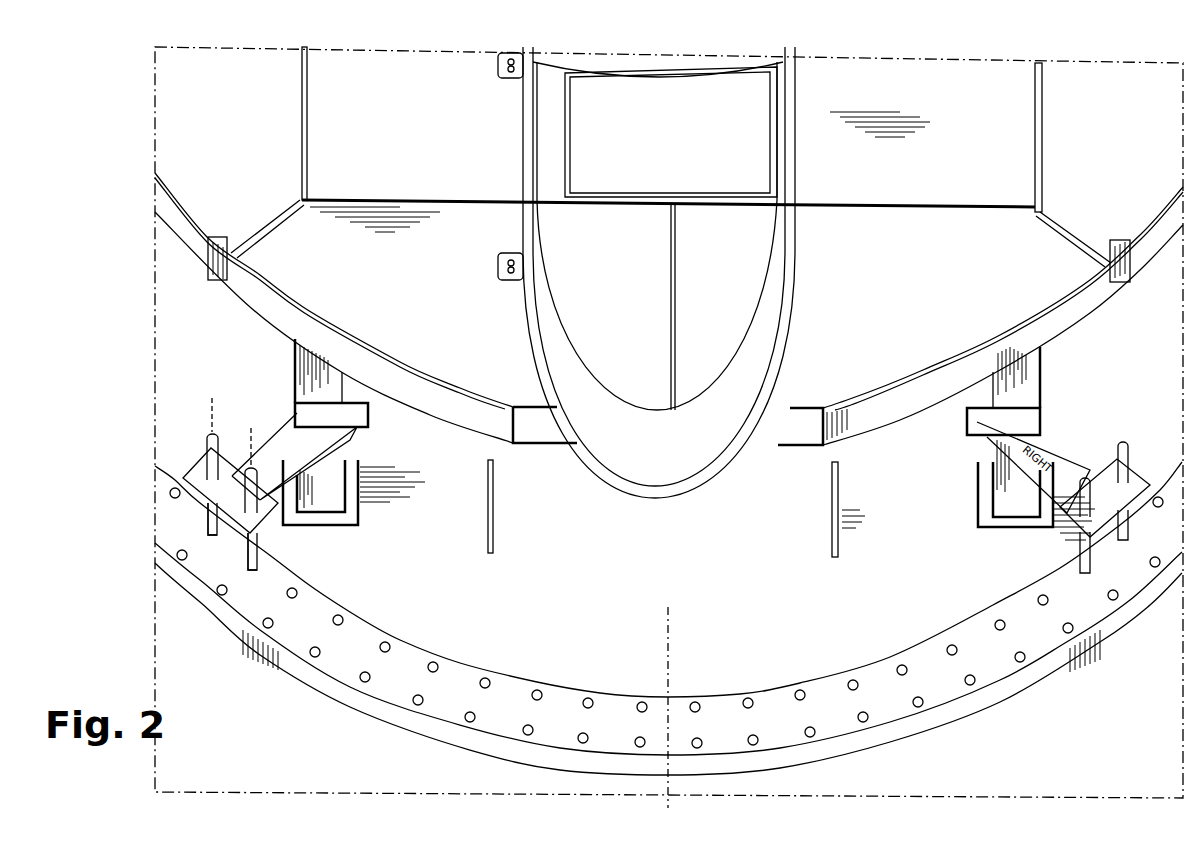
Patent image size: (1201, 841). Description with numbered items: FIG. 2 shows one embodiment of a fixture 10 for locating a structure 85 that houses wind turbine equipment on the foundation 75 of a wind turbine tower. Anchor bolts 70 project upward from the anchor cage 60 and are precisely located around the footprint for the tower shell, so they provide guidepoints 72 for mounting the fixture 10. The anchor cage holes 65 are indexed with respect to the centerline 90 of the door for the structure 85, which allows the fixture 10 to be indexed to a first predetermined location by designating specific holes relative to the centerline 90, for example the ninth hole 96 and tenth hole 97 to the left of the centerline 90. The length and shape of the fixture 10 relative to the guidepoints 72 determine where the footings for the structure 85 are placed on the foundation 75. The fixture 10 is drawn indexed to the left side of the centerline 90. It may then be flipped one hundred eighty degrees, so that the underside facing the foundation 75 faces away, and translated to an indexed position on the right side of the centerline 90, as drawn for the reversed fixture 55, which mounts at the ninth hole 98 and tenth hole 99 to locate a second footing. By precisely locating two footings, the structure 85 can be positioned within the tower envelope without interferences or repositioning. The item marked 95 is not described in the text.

The fixture 10 is at (268, 430).
The reversed fixture 55 is at (1065, 462).
The anchor cage 60 is at (175, 525).
The anchor cage holes 65 is at (175, 493).
The anchor bolts 70 is at (207, 452).
The guidepoints 72 is at (208, 413).
The foundation 75 is at (185, 412).
The structure 85 is at (945, 87).
The centerline 90 is at (670, 641).
The window opening 95 is at (710, 105).
The 9th hole 96 is at (252, 570).
The 10th hole 97 is at (213, 535).
The 9th hole 98 is at (1085, 573).
The 10th hole 99 is at (1123, 540).